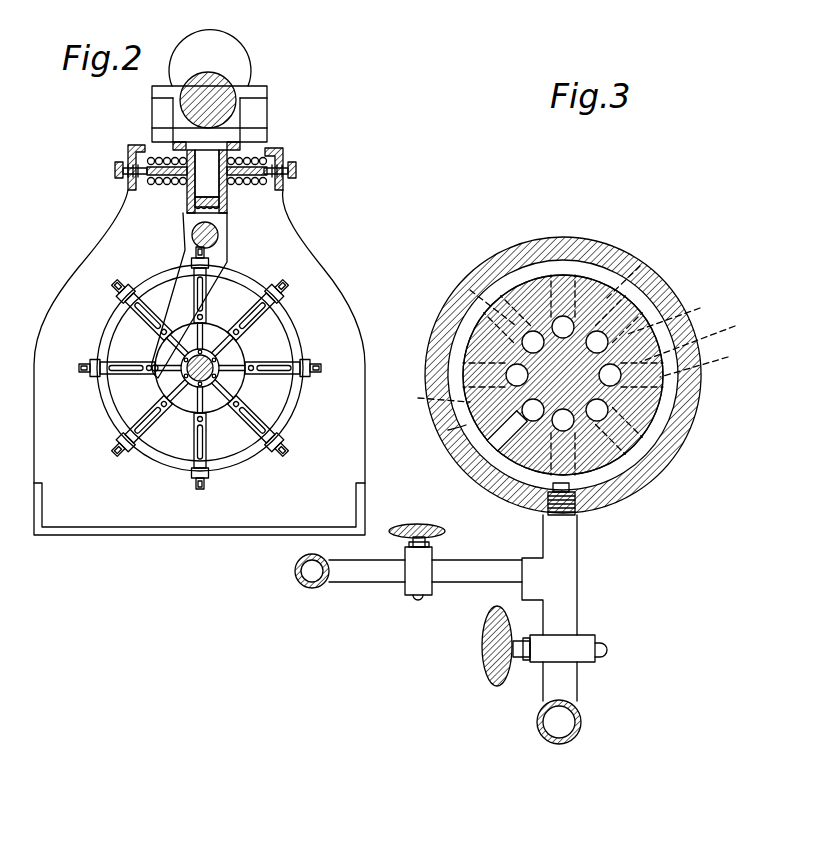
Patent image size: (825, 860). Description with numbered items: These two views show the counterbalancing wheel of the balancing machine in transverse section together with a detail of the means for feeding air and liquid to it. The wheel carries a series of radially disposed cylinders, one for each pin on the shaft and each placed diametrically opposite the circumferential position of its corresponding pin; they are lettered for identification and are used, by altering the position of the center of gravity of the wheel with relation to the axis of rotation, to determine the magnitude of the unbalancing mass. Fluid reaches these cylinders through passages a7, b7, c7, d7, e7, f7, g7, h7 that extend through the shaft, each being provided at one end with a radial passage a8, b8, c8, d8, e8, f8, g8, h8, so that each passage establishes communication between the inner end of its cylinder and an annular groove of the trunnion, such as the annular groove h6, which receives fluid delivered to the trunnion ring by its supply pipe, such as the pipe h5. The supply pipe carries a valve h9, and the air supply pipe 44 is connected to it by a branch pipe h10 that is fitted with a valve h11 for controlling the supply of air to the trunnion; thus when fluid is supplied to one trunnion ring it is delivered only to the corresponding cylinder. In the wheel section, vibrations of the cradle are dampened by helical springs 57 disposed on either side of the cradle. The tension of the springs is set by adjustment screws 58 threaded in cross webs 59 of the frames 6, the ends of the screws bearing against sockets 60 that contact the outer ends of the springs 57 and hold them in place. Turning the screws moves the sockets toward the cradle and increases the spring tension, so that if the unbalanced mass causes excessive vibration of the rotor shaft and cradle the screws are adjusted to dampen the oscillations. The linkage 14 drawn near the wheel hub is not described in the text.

In FIG. 2, the frame 6 is at (358, 356).
In FIG. 2, the actuating disk lever 14 is at (148, 332).
In FIG. 2, the helical spring 57 is at (252, 165).
In FIG. 2, the adjustment screw 58 is at (118, 171).
In FIG. 2, the cross web 59 is at (130, 184).
In FIG. 2, the socket 60 is at (268, 190).
In FIG. 3, the passage a7 is at (563, 408).
In FIG. 3, the passage b7 is at (590, 404).
In FIG. 3, the passage c7 is at (614, 385).
In FIG. 3, the passage d7 is at (608, 343).
In FIG. 3, the passage e7 is at (565, 338).
In FIG. 3, the passage f7 is at (545, 345).
In FIG. 3, the passage g7 is at (531, 370).
In FIG. 3, the passage h7 is at (538, 403).
In FIG. 3, the radial passage a8 is at (652, 477).
In FIG. 3, the radial passage b8 is at (708, 359).
In FIG. 3, the radial passage c8 is at (701, 334).
In FIG. 3, the radial passage d8 is at (700, 308).
In FIG. 3, the radial passage e8 is at (640, 266).
In FIG. 3, the radial passage f8 is at (470, 290).
In FIG. 3, the radial passage g8 is at (432, 395).
In FIG. 3, the annular groove h6 is at (448, 430).
In FIG. 3, the radial passage h8 is at (465, 467).
In FIG. 3, the pipe h5 is at (574, 684).
In FIG. 3, the valve h9 is at (492, 682).
In FIG. 3, the pipe h10 is at (492, 547).
In FIG. 3, the valve h11 is at (424, 533).
In FIG. 3, the air supply pipe 44 is at (307, 586).